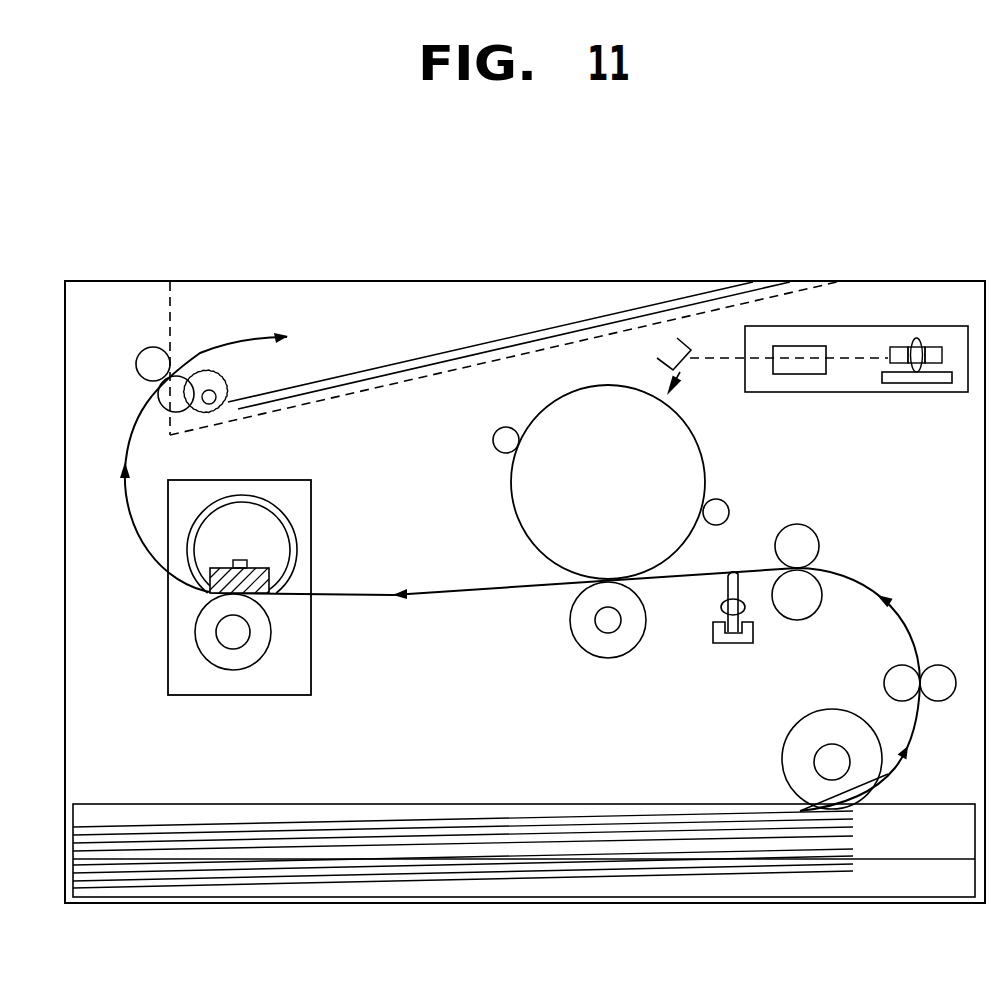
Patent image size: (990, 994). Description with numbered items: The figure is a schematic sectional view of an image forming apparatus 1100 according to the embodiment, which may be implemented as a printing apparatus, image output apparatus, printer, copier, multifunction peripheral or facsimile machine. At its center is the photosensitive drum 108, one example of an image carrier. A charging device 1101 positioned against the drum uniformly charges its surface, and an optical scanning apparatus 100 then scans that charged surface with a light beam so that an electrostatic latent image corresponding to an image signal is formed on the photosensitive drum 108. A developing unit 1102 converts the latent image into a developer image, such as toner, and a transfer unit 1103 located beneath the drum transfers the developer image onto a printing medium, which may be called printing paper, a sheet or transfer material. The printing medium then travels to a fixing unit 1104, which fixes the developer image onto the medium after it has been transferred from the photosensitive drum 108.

The image forming apparatus 1100 is at (684, 244).
The optical scanning apparatus 100 is at (918, 393).
The photosensitive drum 108 is at (704, 447).
The charging device 1101 is at (499, 444).
The developing unit 1102 is at (730, 505).
The transfer unit 1103 is at (606, 660).
The fixing unit 1104 is at (168, 670).